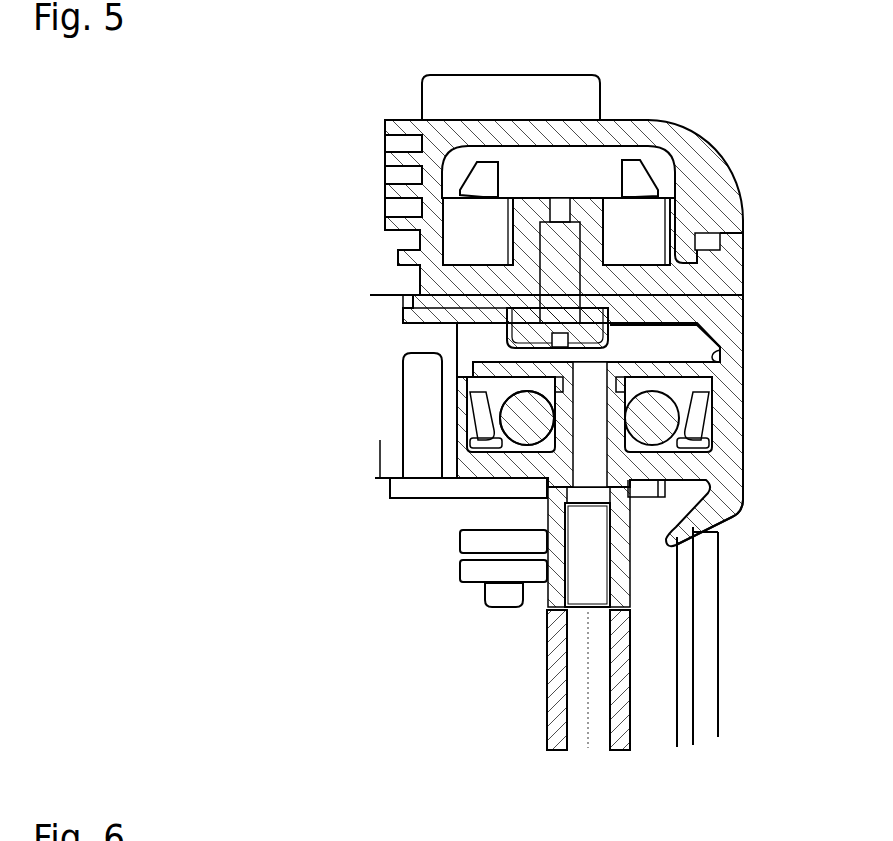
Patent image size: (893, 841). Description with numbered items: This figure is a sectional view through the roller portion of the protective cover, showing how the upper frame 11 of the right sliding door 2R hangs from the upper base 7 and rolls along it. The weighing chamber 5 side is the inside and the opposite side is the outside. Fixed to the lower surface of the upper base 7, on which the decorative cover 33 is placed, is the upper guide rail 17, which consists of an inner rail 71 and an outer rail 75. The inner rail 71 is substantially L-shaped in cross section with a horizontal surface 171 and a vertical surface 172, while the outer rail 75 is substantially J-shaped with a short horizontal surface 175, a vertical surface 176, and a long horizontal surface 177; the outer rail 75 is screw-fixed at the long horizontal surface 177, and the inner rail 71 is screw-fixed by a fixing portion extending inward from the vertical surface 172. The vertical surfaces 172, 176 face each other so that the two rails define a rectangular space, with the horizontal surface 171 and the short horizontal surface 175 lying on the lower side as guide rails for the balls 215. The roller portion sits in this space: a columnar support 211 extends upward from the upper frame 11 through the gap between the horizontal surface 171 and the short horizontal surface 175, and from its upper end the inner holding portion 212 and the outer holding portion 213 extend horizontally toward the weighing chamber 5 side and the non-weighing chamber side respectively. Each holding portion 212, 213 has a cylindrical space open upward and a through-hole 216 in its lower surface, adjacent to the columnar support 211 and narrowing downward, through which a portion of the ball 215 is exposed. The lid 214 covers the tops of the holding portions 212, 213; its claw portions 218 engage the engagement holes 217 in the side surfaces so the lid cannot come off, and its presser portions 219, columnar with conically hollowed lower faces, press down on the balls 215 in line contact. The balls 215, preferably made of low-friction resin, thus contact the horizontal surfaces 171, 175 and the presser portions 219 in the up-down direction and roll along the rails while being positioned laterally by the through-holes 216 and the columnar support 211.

The upper base 7 is at (660, 262).
The decorative cover 33 is at (558, 115).
The presser portion 219 is at (438, 238).
The long horizontal surface 177 is at (662, 326).
The inner rail 71 is at (397, 318).
The upper guide rail 17 is at (748, 301).
The inner holding portion 212 is at (466, 388).
The outer holding portion 213 is at (714, 384).
The through-hole 216 is at (498, 449).
The claw portion 218 is at (468, 404).
The engagement hole 217 is at (467, 433).
The lid 214 is at (522, 393).
The ball 215 is at (478, 418).
The outer rail 75 is at (737, 330).
The vertical surface 176 is at (722, 358).
The short horizontal surface 175 is at (740, 480).
The vertical surface 172 is at (458, 346).
The horizontal surface 171 is at (466, 438).
The columnar support 211 is at (632, 592).
The upper frame 11 is at (630, 628).
The right sliding door 2R is at (582, 673).
The weighing chamber 5 is at (418, 713).